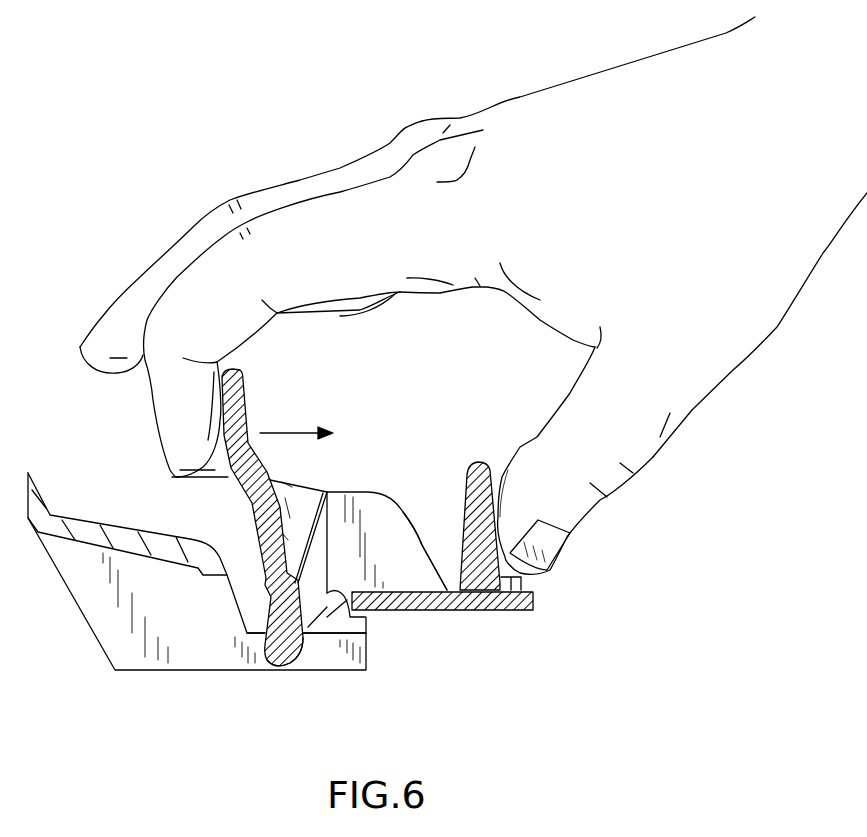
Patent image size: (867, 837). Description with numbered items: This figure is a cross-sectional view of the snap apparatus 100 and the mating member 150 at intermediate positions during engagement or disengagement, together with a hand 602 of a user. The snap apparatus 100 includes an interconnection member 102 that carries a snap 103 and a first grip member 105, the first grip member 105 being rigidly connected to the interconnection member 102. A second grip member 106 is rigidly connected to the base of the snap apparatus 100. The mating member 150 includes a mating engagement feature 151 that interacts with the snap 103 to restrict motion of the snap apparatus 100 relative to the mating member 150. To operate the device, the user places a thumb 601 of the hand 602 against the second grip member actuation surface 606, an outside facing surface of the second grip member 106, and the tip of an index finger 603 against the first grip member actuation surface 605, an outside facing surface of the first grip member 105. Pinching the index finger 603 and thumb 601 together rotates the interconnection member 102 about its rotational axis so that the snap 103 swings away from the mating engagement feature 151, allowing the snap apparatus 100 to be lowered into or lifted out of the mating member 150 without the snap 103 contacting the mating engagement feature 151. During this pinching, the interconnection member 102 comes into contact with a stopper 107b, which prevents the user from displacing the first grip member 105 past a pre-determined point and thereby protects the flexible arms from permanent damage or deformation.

The snap apparatus 100 is at (393, 483).
The interconnection member 102 is at (273, 483).
The snap 103 is at (270, 662).
The first grip member 105 is at (230, 368).
The second grip member 106 is at (485, 460).
The stopper 107b is at (417, 530).
The mating member 150 is at (91, 652).
The mating engagement feature 151 is at (326, 636).
The thumb 601 is at (650, 460).
The hand 602 is at (500, 100).
The index finger 603 is at (148, 393).
The first grip member actuation surface 605 is at (215, 460).
The second grip member actuation surface 606 is at (527, 590).